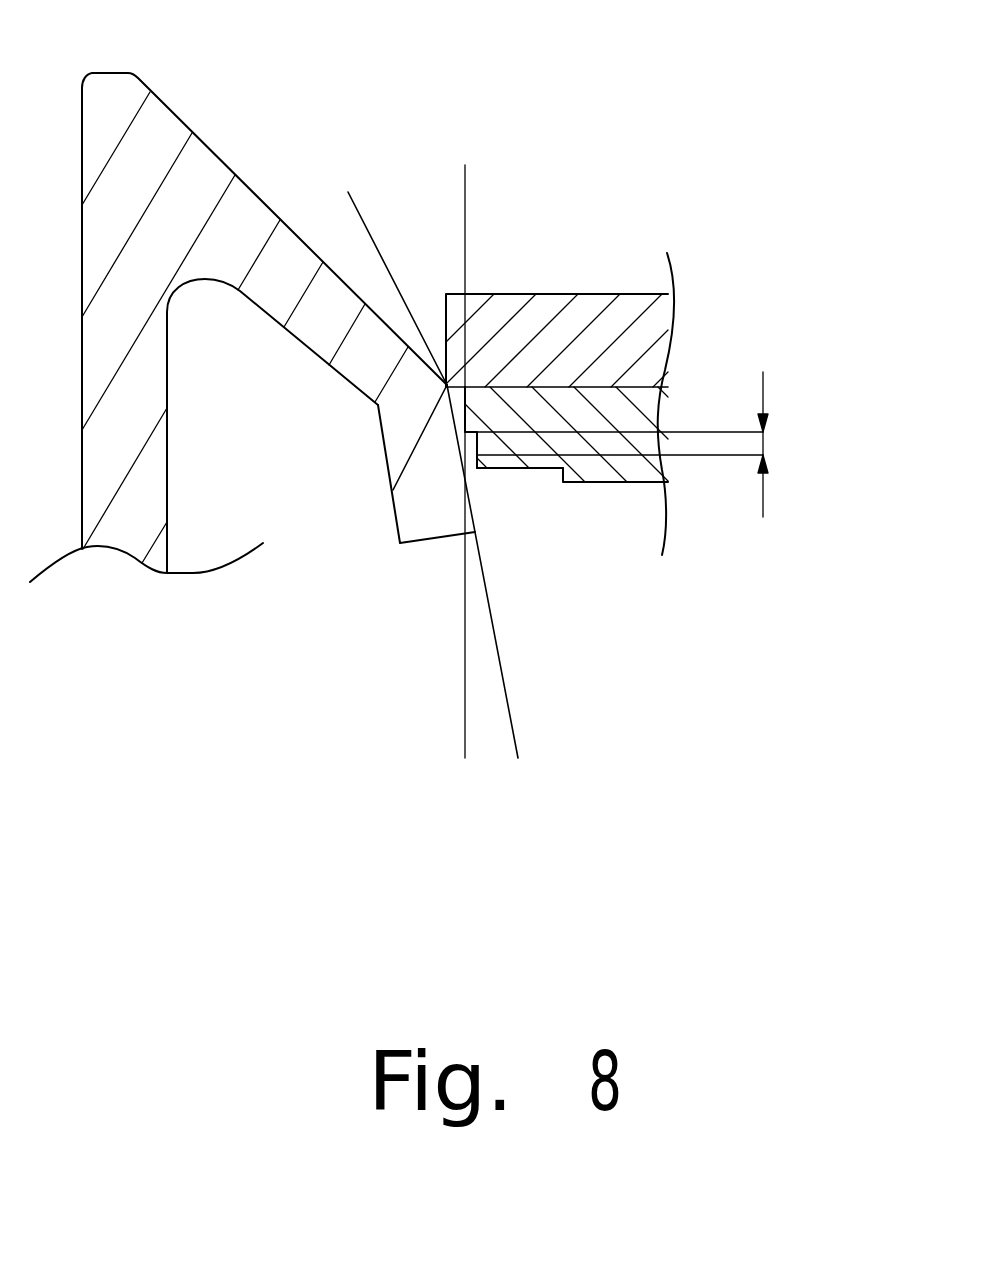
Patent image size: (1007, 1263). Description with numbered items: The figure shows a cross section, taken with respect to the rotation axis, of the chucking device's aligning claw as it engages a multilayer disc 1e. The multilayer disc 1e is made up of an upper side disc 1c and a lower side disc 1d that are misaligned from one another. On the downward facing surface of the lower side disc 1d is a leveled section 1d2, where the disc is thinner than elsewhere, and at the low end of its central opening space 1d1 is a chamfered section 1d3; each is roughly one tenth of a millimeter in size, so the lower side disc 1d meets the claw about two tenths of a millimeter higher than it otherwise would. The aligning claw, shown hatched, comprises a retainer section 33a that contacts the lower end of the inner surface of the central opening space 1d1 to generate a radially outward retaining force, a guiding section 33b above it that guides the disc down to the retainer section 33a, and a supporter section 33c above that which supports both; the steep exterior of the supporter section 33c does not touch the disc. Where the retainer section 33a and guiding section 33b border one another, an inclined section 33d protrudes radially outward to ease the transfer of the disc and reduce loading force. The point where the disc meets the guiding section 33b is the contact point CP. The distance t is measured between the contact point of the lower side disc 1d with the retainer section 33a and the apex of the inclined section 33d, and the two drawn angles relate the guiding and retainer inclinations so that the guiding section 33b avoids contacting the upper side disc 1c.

The supporter section 33c is at (284, 253).
The guiding section 33b is at (437, 382).
The retainer section 33a is at (425, 518).
The inclined section 33d is at (583, 433).
The contact point CP is at (452, 400).
The upper side disc 1c is at (550, 313).
The multilayer disc 1e is at (633, 283).
The central opening space 1d1 is at (465, 412).
The lower side disc 1d is at (603, 467).
The leveled section 1d2 is at (507, 470).
The chamfered section 1d3 is at (473, 477).
The distance t is at (762, 437).